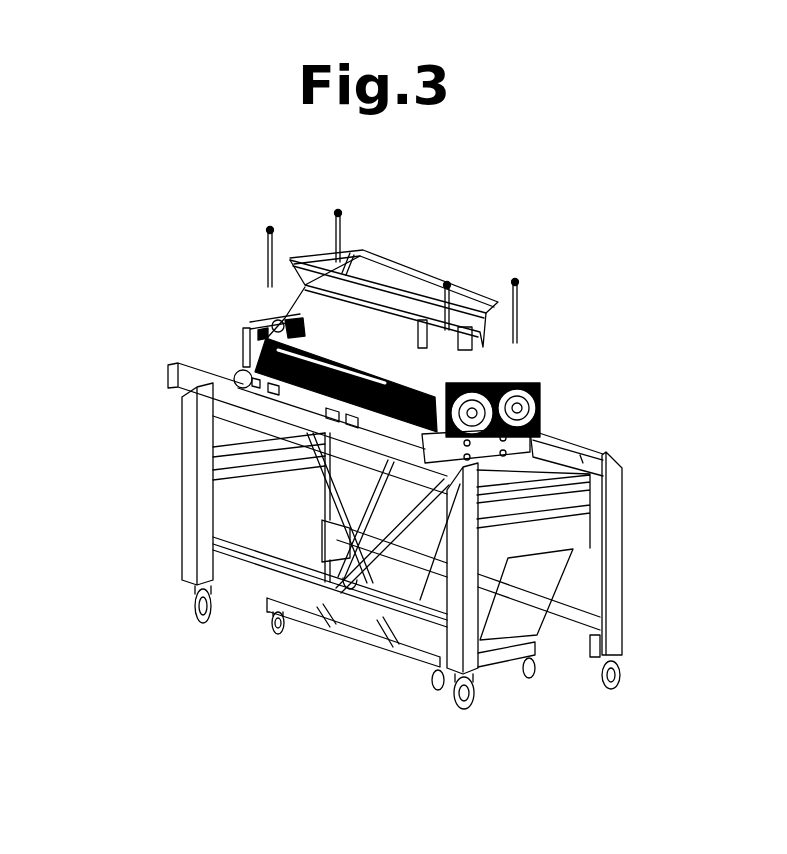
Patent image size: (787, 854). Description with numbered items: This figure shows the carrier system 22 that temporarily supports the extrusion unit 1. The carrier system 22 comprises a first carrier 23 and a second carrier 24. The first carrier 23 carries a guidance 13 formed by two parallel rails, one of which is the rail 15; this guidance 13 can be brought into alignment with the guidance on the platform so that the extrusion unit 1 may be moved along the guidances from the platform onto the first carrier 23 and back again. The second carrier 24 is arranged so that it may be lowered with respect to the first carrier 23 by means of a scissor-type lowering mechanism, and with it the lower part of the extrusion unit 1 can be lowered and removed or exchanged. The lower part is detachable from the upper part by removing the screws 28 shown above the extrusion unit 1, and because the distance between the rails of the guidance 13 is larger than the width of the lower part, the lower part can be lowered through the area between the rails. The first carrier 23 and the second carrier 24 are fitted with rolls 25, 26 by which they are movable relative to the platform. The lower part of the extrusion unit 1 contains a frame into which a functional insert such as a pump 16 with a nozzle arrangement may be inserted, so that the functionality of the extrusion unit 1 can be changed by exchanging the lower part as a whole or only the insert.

The extrusion unit 1 is at (437, 265).
The guidance 13 is at (576, 414).
The rail 15 is at (257, 402).
The pump 16 is at (603, 458).
The carrier system 22 is at (654, 231).
The first carrier 23 is at (182, 480).
The second carrier 24 is at (367, 635).
The roll 25 is at (206, 614).
The roll 26 is at (279, 631).
The screws 28 is at (258, 258).